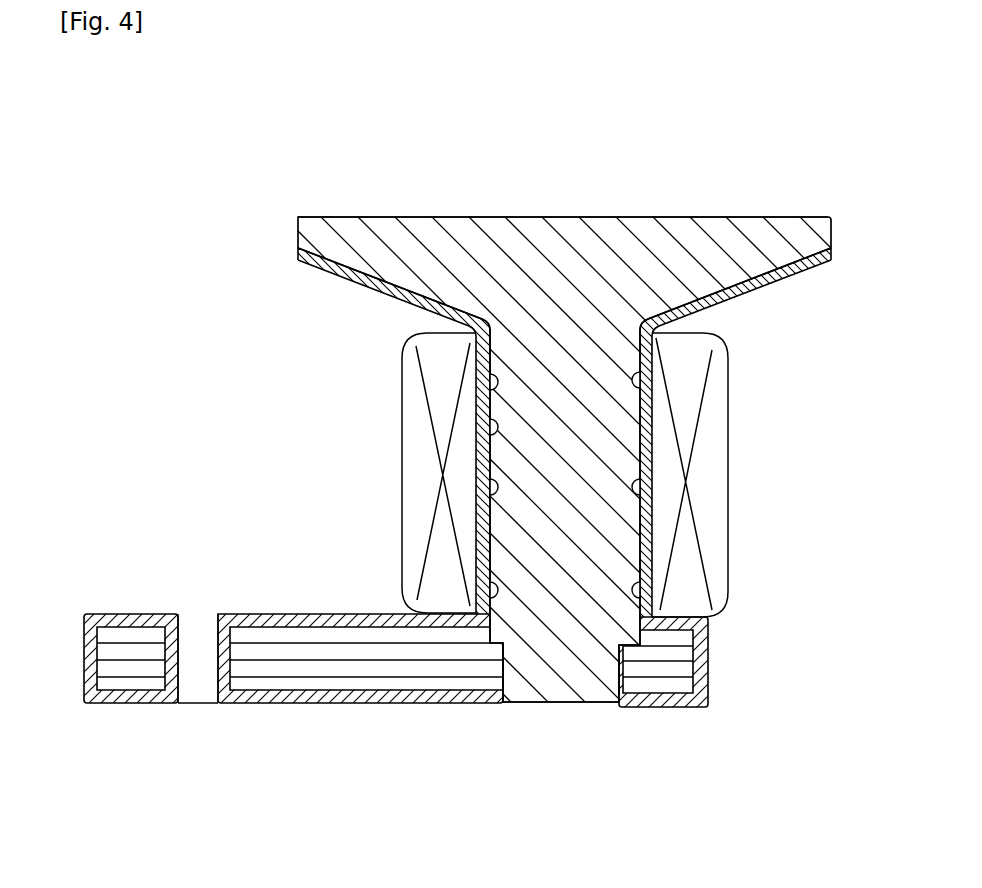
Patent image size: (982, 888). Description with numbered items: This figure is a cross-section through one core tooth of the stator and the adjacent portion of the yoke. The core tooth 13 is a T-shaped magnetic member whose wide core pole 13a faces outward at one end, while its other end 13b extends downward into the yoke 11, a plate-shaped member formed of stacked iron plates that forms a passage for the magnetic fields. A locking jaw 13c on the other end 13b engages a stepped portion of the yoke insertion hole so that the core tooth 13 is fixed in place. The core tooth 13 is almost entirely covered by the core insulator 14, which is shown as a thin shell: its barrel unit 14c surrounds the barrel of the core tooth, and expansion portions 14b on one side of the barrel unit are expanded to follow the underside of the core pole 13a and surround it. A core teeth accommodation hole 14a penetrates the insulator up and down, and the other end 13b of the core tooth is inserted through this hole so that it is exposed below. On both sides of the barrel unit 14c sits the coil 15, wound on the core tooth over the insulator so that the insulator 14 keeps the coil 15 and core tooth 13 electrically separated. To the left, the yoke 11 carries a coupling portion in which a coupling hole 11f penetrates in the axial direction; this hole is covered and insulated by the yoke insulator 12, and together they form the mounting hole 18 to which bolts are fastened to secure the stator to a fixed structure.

The yoke 11 is at (307, 668).
The coupling hole 11f is at (218, 647).
The yoke insulator 12 is at (340, 674).
The core tooth 13 is at (491, 448).
The core pole 13a is at (565, 217).
The other end of core tooth 13b is at (563, 703).
The locking jaw 13c is at (636, 650).
The core insulator 14 is at (564, 432).
The core teeth accommodation hole 14a is at (757, 290).
The expansion portion 14b is at (490, 433).
The barrel unit 14c is at (655, 550).
The coil 15 is at (735, 423).
The mounting hole 18 is at (180, 673).